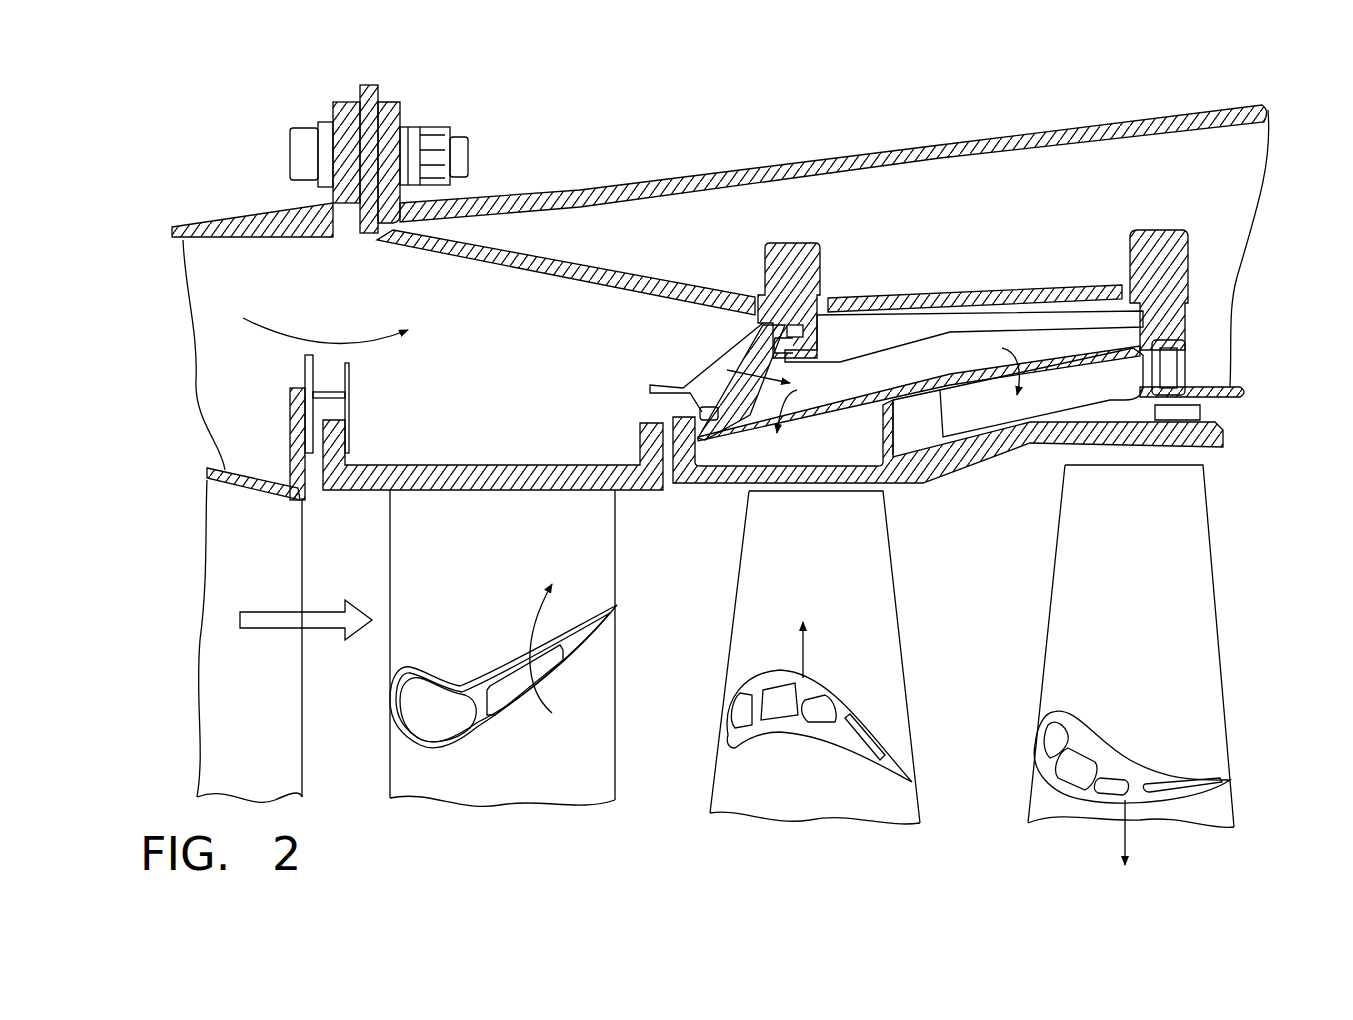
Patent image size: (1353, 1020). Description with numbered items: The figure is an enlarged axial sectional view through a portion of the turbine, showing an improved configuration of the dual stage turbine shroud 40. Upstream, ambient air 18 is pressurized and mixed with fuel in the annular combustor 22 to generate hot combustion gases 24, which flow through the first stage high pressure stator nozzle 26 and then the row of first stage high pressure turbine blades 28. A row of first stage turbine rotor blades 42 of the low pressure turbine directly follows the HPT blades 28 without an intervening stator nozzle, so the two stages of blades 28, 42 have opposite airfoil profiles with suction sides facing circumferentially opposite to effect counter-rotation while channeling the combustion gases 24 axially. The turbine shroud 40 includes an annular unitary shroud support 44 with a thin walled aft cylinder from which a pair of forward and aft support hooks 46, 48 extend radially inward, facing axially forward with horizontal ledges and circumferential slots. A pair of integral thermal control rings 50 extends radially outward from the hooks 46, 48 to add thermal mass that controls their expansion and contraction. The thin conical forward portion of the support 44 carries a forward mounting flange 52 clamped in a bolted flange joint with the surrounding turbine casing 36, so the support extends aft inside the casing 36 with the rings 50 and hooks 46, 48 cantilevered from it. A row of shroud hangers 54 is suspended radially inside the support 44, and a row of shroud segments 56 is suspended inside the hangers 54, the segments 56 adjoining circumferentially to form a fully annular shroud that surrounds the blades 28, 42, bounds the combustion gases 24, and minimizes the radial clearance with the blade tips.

The ambient air 18 is at (325, 312).
The annular combustor 22 is at (192, 562).
The hot combustion gases 24 is at (280, 632).
The first stage high pressure stator nozzle 26 is at (516, 581).
The first stage high pressure turbine blades 28 is at (830, 578).
The turbine casing 36 is at (730, 165).
The turbine shroud 40 is at (945, 280).
The first stage turbine rotor blades 42 is at (1150, 578).
The shroud support 44 is at (620, 268).
The forward support hook 46 is at (813, 350).
The aft support hook 48 is at (1187, 337).
The thermal control rings 50 is at (796, 243).
The forward mounting flange 52 is at (377, 93).
The shroud hangers 54 is at (888, 378).
The shroud segments 56 is at (968, 476).